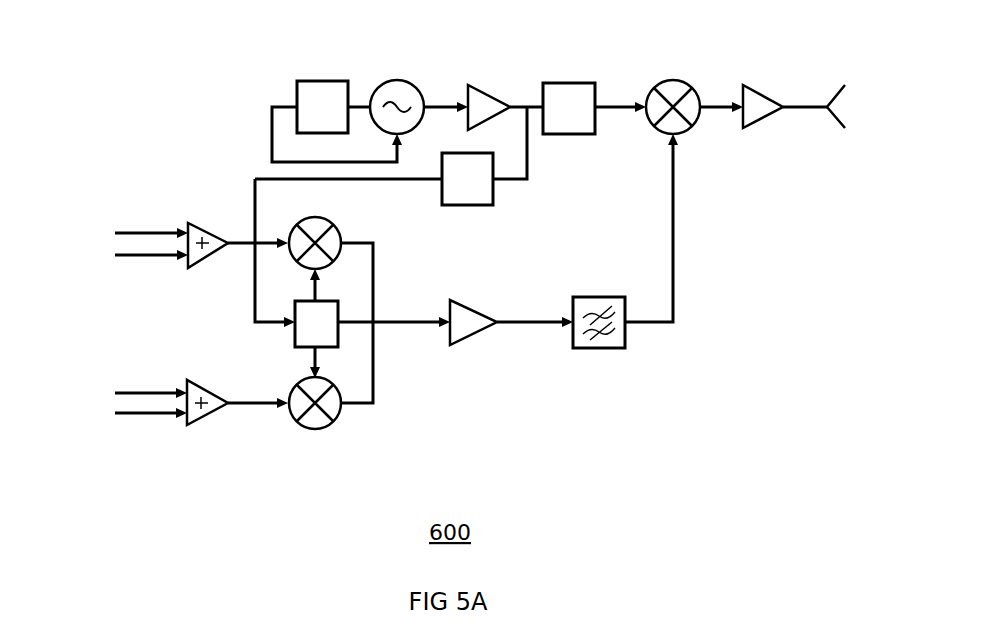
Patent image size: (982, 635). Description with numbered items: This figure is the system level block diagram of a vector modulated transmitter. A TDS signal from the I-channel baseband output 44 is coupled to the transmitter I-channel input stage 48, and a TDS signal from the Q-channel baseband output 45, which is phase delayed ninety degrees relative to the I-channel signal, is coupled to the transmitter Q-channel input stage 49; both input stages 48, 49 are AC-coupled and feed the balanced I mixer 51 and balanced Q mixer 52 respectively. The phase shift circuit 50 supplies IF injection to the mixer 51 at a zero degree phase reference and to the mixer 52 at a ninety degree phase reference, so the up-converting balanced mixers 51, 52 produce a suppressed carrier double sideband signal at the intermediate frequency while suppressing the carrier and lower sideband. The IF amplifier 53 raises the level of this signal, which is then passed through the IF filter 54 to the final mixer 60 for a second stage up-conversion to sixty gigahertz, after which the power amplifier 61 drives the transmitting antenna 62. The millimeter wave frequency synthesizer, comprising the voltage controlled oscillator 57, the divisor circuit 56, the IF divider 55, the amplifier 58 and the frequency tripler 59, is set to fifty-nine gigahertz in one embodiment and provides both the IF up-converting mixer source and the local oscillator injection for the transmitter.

The I-channel baseband output 44 is at (126, 216).
The Q-channel baseband output 45 is at (126, 376).
The transmitter I-channel input stage 48 is at (201, 220).
The transmitter Q-channel input stage 49 is at (208, 428).
The phase shift circuit 50 is at (292, 348).
The balanced I mixer 51 is at (343, 227).
The balanced Q mixer 52 is at (333, 433).
The IF amplifier 53 is at (471, 348).
The IF filter 54 is at (605, 352).
The IF divider 55 is at (470, 208).
The divisor circuit 56 is at (322, 79).
The voltage controlled oscillator 57 is at (398, 79).
The synthesizer amplifier 58 is at (480, 80).
The frequency tripler 59 is at (569, 80).
The final mixer 60 is at (652, 130).
The power amplifier 61 is at (765, 130).
The transmitting antenna 62 is at (835, 140).